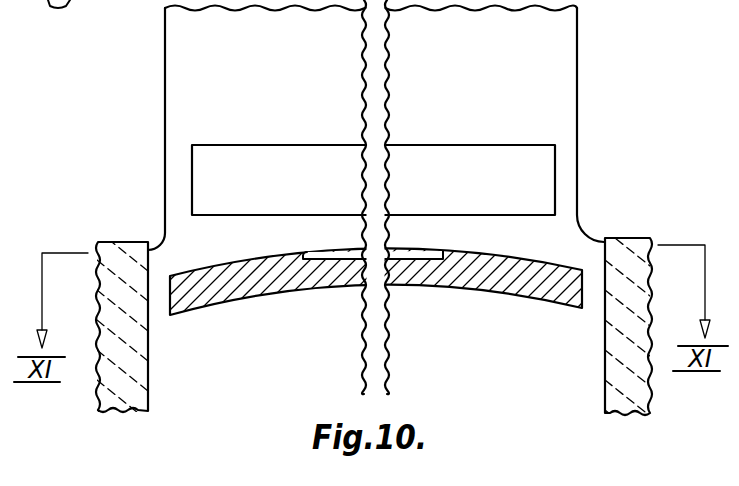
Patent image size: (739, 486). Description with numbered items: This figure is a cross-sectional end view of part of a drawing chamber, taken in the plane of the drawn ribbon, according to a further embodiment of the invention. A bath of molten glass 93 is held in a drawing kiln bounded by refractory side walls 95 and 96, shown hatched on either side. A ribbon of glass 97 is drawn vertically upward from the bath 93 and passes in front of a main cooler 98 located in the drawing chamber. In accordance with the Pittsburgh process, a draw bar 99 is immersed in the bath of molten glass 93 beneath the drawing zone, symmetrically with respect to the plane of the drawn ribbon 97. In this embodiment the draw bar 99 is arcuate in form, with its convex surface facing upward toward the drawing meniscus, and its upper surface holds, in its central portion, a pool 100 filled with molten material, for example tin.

The bath of molten glass 93 is at (440, 364).
The refractory side wall 95 is at (627, 262).
The refractory side wall 96 is at (119, 261).
The ribbon of glass 97 is at (492, 57).
The main cooler 98 is at (443, 187).
The draw bar 99 is at (289, 286).
The pool 100 is at (338, 252).